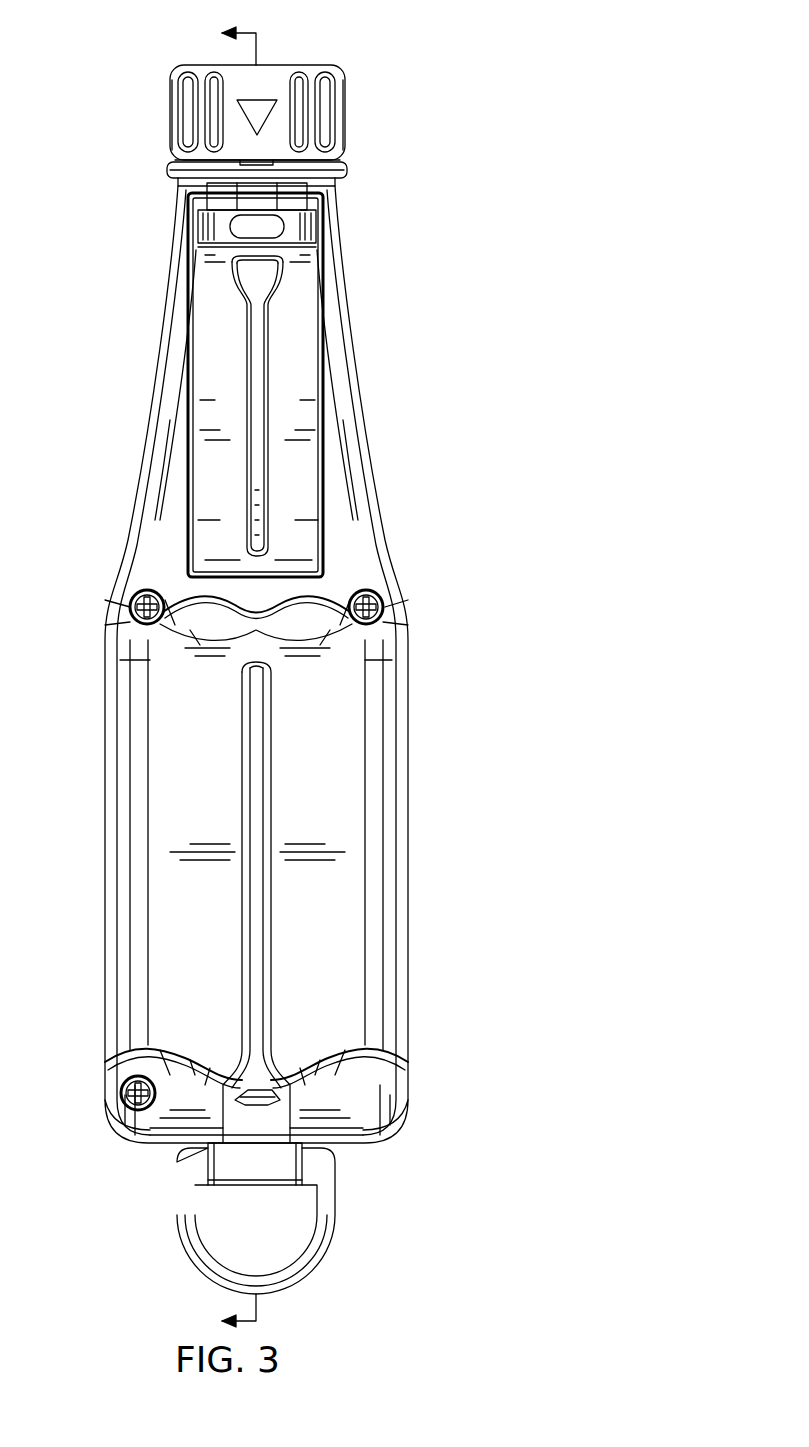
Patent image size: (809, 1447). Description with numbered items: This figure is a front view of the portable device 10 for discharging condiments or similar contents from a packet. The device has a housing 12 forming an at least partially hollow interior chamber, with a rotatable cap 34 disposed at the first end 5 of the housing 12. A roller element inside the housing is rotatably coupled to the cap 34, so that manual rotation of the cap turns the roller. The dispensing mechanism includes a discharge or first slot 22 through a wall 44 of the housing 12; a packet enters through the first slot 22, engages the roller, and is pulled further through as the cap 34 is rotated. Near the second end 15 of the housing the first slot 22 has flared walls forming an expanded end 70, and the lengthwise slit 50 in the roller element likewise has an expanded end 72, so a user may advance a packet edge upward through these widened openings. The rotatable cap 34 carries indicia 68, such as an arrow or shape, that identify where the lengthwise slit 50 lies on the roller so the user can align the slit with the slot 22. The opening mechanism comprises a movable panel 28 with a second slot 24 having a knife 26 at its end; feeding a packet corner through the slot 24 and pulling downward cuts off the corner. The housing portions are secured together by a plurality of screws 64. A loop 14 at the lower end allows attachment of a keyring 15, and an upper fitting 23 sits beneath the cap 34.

The first end 5 is at (291, 66).
The portable device 10 is at (430, 52).
The housing 12 is at (105, 546).
The loop 14 is at (185, 1230).
The keyring 15 is at (370, 1145).
The first slot 22 is at (258, 913).
The inlet fitting 23 is at (258, 283).
The second slot 24 is at (258, 381).
The knife 26 is at (253, 490).
The movable panel 28 is at (300, 305).
The rotatable cap 34 is at (190, 108).
The wall 44 is at (330, 757).
The lengthwise slit 50 is at (150, 1066).
The screws 64 is at (130, 605).
The indicia 68 is at (258, 110).
The expanded end 70 is at (405, 1123).
The expanded end 72 is at (258, 1095).